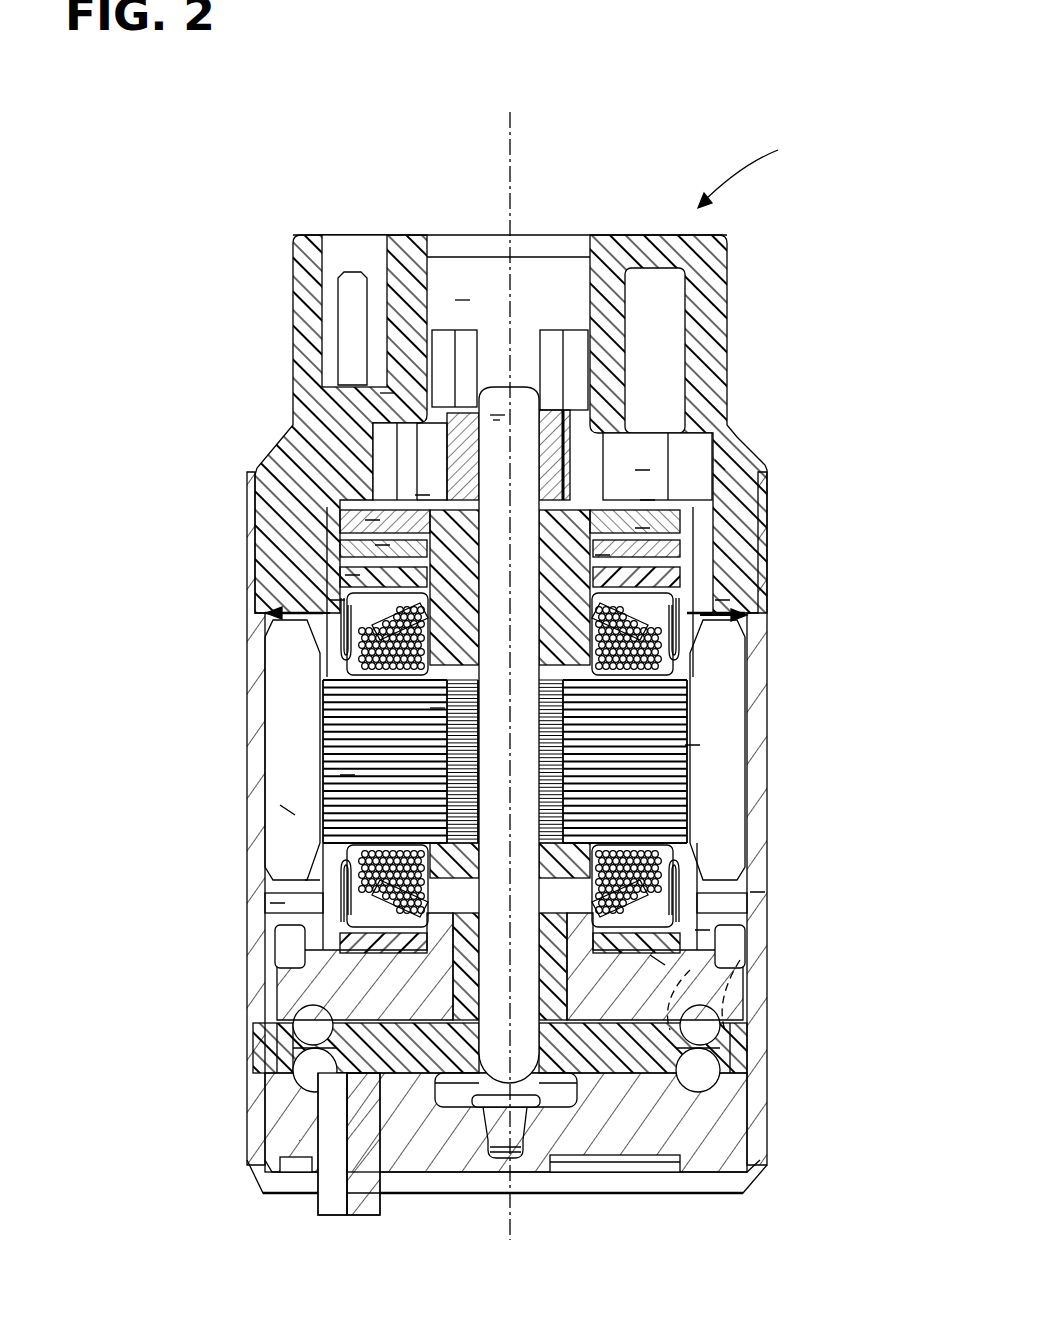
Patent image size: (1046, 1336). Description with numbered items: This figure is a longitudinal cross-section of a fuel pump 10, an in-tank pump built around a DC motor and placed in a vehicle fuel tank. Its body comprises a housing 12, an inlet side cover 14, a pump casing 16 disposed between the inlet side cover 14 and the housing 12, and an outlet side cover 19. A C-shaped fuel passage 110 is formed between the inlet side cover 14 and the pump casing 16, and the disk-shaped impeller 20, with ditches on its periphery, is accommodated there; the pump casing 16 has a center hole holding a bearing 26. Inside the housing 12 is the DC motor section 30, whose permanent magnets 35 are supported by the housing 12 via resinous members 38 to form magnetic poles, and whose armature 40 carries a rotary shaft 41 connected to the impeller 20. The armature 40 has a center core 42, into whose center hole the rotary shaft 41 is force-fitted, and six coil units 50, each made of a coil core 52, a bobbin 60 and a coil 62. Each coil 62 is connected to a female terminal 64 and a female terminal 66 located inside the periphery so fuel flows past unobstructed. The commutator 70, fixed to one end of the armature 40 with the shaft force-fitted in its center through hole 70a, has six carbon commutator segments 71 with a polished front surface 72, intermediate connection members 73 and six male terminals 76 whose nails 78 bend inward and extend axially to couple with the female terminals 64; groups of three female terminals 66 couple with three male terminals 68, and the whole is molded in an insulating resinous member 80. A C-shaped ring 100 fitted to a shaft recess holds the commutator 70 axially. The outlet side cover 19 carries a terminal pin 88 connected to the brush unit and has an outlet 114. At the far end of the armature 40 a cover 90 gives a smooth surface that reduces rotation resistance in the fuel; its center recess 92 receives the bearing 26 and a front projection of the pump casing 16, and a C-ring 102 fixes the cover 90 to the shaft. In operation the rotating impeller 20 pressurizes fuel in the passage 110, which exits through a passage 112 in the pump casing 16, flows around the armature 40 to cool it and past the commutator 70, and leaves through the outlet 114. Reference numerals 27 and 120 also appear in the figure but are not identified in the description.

The fuel pump 10 is at (751, 162).
The housing 12 is at (766, 792).
The inlet side cover 14 is at (735, 1130).
The pump casing 16 is at (300, 980).
The outlet side cover 19 is at (727, 262).
The impeller 20 is at (393, 1060).
The bearing 26 is at (270, 1052).
The step portion 27 is at (387, 393).
The DC motor section 30 is at (293, 750).
The permanent magnets 35 is at (287, 810).
The resinous members 38 is at (750, 925).
The armature 40 is at (355, 740).
The rotary shaft 41 is at (497, 420).
The center core 42 is at (435, 708).
The coil unit 50 is at (330, 613).
The coil core 52 is at (345, 775).
The bobbin 60 is at (345, 845).
The coil 62 is at (380, 545).
The female terminal 64 is at (335, 600).
The female terminal 66 is at (310, 880).
The male terminals 68 is at (277, 903).
The commutator 70 is at (690, 330).
The center through hole 70a is at (495, 420).
The commutator segments 71 is at (400, 470).
The front surface 72 is at (378, 440).
The intermediate connection members 73 is at (420, 495).
The male terminals 76 is at (370, 520).
The nail 78 is at (350, 575).
The insulating resinous member 80 is at (720, 467).
The terminal pin 88 is at (355, 290).
The cover 90 is at (655, 960).
The center recess 92 is at (590, 920).
The C-shaped ring 100 is at (522, 425).
The C-ring 102 is at (275, 945).
The C-shaped fuel passage 110 is at (300, 1055).
The passage 112 is at (700, 1020).
The outlet 114 is at (463, 303).
The rotation axis 120 is at (512, 132).